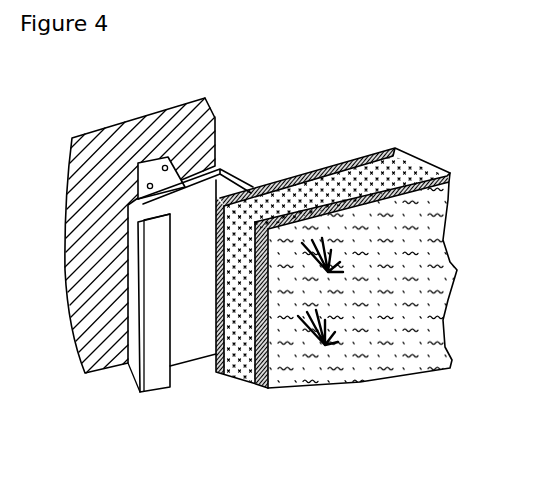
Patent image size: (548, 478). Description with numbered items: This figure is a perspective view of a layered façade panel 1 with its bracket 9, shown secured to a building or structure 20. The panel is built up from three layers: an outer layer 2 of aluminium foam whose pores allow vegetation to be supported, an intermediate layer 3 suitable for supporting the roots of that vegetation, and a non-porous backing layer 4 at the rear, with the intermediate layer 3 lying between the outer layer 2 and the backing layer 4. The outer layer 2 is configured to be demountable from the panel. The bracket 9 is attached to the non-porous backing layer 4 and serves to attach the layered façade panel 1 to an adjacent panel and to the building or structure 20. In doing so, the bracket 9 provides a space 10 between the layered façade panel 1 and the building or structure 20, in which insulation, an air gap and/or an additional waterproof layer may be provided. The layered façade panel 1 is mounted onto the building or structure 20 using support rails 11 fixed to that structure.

The layered façade panel 1 is at (363, 275).
The outer layer 2 is at (418, 232).
The intermediate layer 3 is at (393, 152).
The non-porous backing layer 4 is at (317, 170).
The bracket 9 is at (236, 181).
The space 10 is at (247, 140).
The support rails 11 is at (173, 152).
The building or structure 20 is at (107, 373).